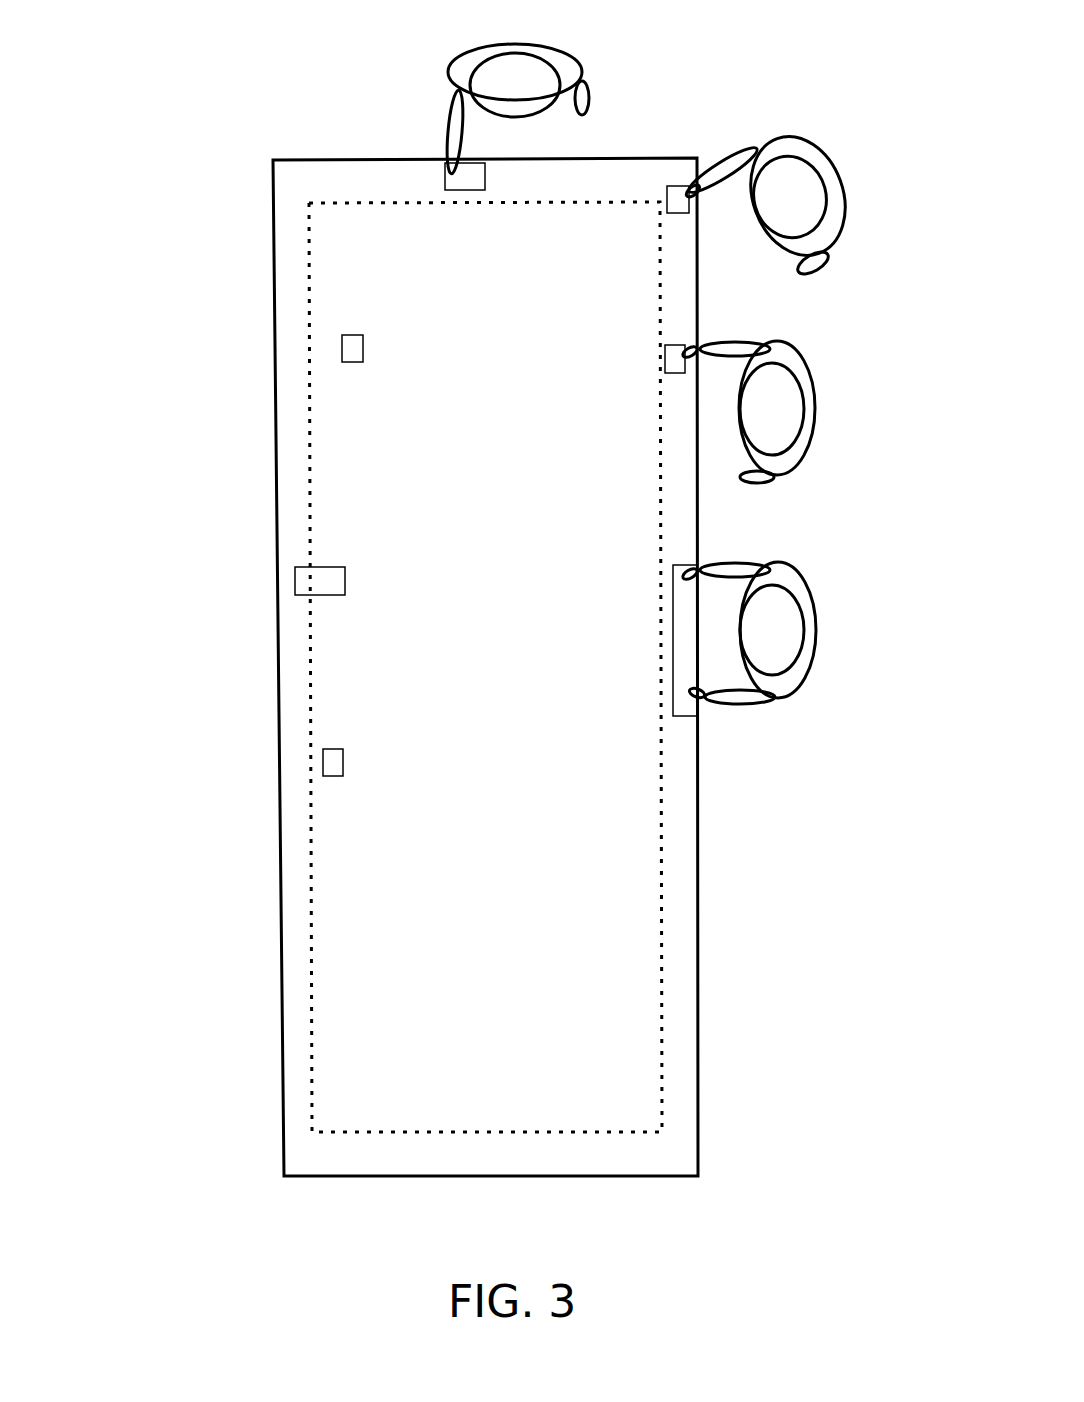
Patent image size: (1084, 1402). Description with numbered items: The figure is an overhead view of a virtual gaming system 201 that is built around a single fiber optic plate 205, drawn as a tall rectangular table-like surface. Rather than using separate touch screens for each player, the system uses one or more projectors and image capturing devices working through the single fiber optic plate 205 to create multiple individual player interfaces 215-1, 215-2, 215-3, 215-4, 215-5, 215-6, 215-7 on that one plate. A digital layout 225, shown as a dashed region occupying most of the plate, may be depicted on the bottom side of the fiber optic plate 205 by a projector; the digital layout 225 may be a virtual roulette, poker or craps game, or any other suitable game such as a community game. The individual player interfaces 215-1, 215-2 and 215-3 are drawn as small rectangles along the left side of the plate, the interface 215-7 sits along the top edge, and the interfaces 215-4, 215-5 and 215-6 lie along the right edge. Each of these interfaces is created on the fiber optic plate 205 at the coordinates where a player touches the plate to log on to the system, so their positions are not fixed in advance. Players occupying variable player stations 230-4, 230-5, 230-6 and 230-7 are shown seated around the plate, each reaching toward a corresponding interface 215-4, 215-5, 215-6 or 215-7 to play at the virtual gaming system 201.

The virtual gaming system 201 is at (176, 74).
The fiber optic plate 205 is at (268, 158).
The digital layout 225 is at (388, 253).
The individual player interface 215-1 is at (343, 352).
The individual player interface 215-2 is at (296, 582).
The individual player interface 215-3 is at (324, 765).
The individual player interface 215-4 is at (680, 576).
The individual player interface 215-5 is at (678, 358).
The individual player interface 215-6 is at (678, 196).
The individual player interface 215-7 is at (450, 176).
The variable player station 230-4 is at (829, 583).
The variable player station 230-5 is at (836, 372).
The variable player station 230-6 is at (850, 178).
The variable player station 230-7 is at (620, 25).